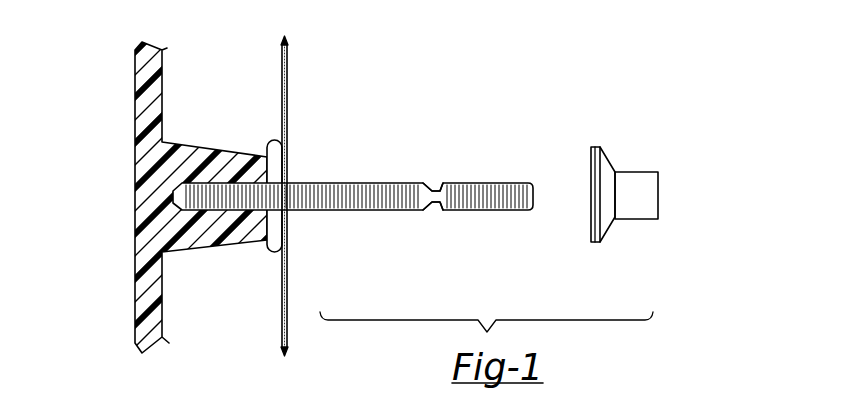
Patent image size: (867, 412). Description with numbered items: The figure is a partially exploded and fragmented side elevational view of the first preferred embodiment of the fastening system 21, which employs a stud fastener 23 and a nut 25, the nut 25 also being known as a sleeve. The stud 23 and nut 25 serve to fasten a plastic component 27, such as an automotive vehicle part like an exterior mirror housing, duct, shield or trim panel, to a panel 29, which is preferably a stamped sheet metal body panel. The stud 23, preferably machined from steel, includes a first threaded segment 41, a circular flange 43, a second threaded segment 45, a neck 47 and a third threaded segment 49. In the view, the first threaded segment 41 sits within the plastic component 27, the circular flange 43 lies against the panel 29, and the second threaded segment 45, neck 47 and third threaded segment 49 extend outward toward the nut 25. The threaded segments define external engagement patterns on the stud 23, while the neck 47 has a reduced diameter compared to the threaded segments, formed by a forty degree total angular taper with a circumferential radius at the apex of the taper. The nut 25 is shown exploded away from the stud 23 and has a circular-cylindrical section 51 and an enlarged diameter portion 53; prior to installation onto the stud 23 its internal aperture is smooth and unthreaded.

The fastening system 21 is at (671, 173).
The stud fastener 23 is at (353, 164).
The nut 25 is at (653, 200).
The plastic component 27 is at (140, 100).
The panel 29 is at (289, 98).
The first threaded segment 41 is at (217, 195).
The circular flange 43 is at (275, 147).
The second threaded segment 45 is at (385, 205).
The neck 47 is at (438, 190).
The third threaded segment 49 is at (507, 185).
The circular-cylindrical section 51 is at (632, 173).
The enlarged diameter portion 53 is at (593, 242).